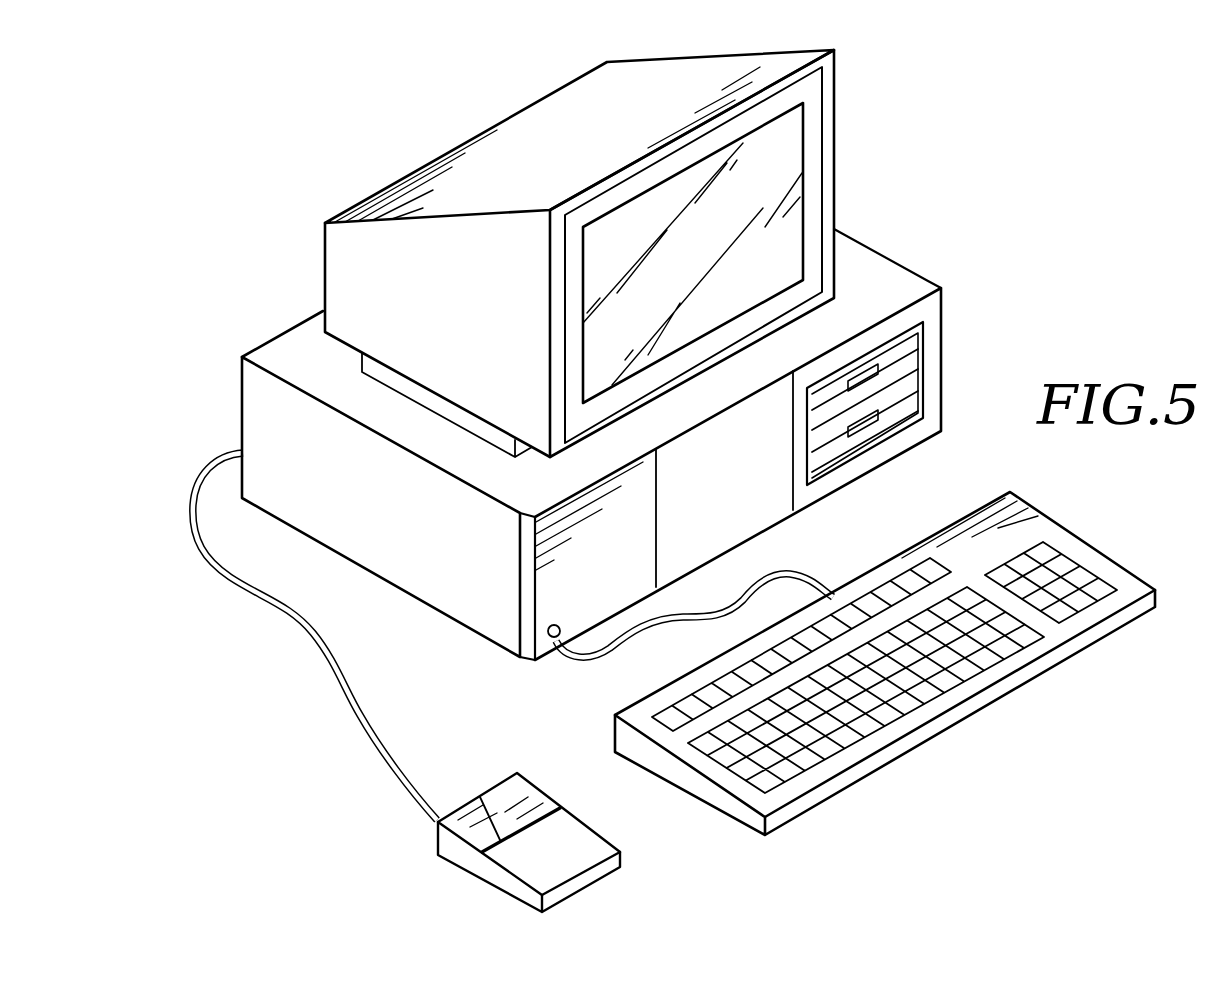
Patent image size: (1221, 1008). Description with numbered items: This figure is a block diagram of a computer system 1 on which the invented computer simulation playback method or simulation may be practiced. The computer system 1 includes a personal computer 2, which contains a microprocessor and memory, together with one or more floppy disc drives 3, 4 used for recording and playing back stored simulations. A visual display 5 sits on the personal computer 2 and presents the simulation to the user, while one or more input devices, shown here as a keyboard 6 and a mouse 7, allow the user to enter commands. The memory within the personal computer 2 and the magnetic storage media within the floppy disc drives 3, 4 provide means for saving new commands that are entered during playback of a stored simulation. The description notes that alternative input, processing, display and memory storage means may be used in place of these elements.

The computer system 1 is at (969, 212).
The personal computer 2 is at (422, 562).
The floppy disc drive 3 is at (907, 344).
The floppy disc drive 4 is at (907, 407).
The visual display 5 is at (573, 108).
The keyboard 6 is at (1037, 525).
The mouse 7 is at (580, 843).